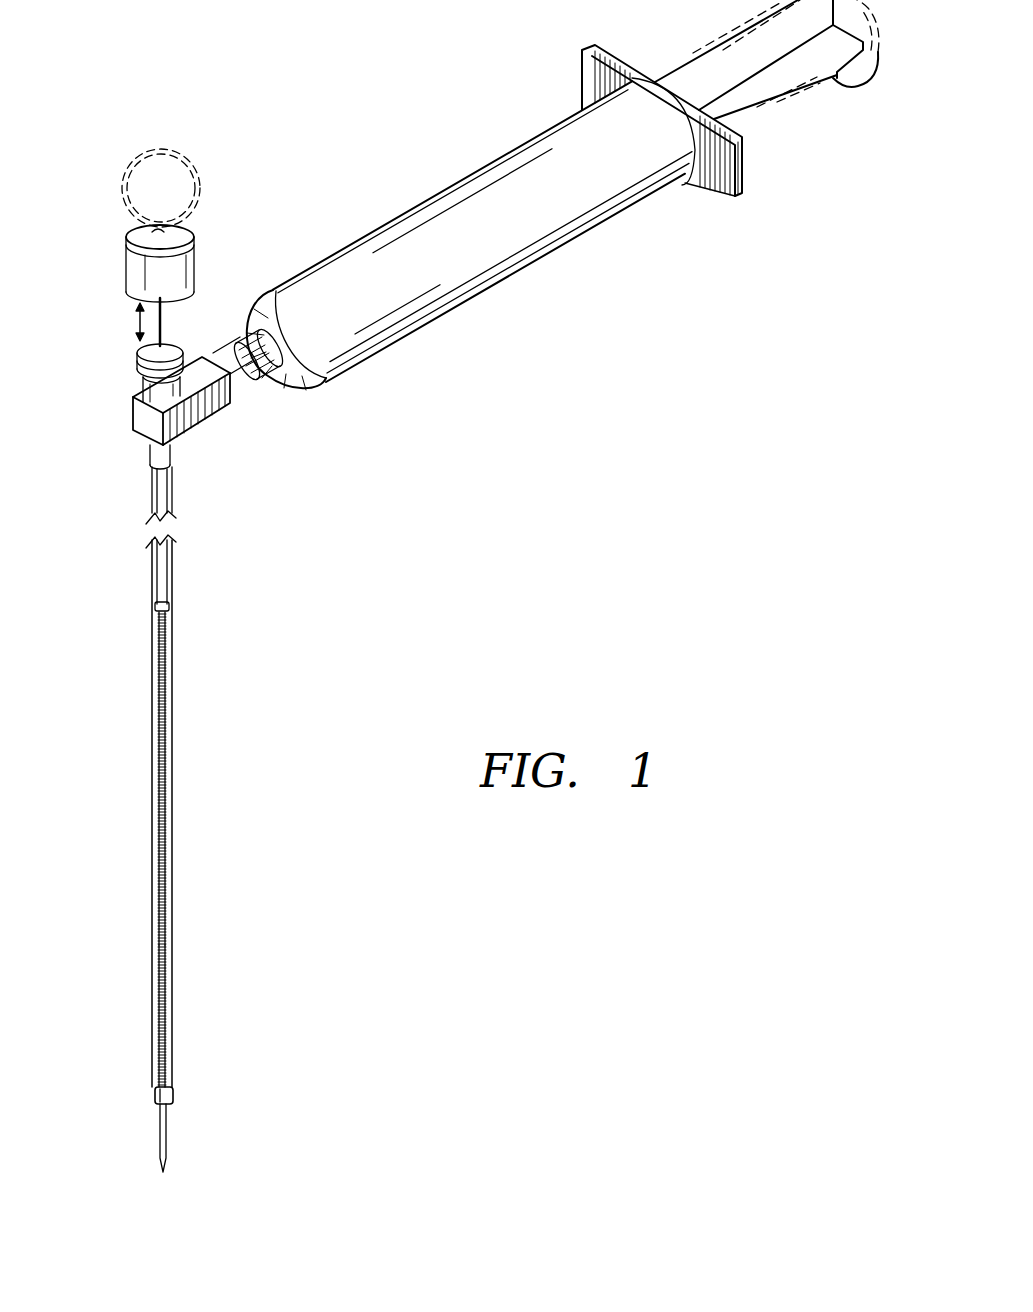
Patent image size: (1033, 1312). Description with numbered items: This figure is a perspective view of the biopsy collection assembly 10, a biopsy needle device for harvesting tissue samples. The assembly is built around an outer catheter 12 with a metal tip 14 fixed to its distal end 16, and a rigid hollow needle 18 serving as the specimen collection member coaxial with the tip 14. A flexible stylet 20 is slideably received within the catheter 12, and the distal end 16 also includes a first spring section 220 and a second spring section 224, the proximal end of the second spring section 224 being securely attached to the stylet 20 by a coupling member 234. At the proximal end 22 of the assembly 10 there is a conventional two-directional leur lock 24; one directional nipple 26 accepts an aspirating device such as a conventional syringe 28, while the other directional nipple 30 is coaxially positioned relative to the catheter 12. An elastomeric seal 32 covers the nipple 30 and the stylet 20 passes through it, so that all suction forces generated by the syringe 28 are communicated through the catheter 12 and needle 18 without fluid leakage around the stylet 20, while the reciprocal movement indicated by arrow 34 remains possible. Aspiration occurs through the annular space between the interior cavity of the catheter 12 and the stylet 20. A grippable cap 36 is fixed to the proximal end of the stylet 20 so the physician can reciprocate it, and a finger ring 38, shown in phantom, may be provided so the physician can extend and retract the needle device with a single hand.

The biopsy collection assembly 10 is at (385, 657).
The outer catheter 12 is at (170, 590).
The metal tip 14 is at (174, 1095).
The distal end 16 is at (228, 1022).
The rigid hollow needle 18 is at (168, 1141).
The flexible stylet 20 is at (175, 324).
The proximal end 22 is at (128, 449).
The two-directional leur lock 24 is at (200, 426).
The directional nipple 26 is at (243, 392).
The syringe 28 is at (500, 284).
The directional nipple 30 is at (145, 388).
The elastomeric seal 32 is at (224, 362).
The arrow 34 is at (138, 313).
The grippable cap 36 is at (133, 272).
The finger ring 38 is at (182, 153).
The first spring section 220 is at (168, 942).
The second spring section 224 is at (168, 713).
The coupling member 234 is at (168, 607).